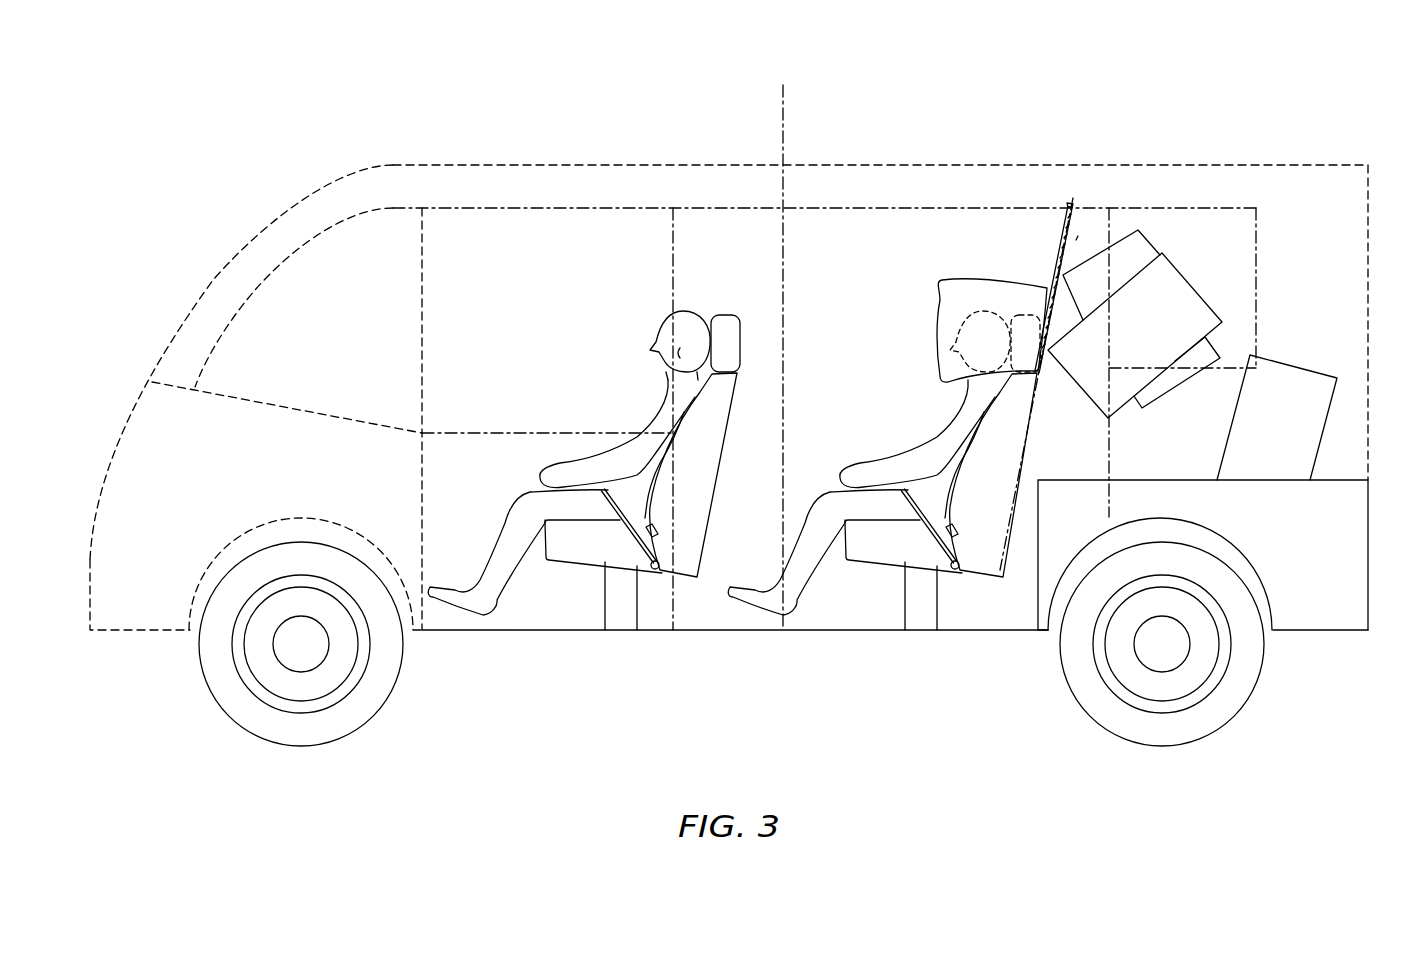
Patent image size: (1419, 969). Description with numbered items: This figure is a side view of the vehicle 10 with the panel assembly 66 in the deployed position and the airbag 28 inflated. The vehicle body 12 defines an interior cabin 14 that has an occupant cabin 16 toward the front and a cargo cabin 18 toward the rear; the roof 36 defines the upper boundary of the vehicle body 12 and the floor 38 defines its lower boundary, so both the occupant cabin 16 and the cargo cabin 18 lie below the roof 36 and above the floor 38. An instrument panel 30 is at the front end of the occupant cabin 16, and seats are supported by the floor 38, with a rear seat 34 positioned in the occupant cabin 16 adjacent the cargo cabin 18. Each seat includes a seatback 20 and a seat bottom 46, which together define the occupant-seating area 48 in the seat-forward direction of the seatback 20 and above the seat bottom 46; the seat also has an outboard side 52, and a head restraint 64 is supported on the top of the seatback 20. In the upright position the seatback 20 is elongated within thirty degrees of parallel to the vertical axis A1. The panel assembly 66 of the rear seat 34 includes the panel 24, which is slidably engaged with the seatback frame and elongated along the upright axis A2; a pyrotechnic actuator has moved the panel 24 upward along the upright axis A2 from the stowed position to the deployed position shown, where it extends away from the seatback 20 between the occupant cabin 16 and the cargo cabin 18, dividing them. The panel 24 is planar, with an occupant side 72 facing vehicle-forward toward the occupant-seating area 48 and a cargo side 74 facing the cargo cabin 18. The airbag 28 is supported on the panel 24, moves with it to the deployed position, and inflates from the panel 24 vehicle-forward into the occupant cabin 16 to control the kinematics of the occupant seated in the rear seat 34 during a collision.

The vehicle 10 is at (124, 220).
The vehicle body 12 is at (268, 232).
The interior cabin 14 is at (575, 250).
The occupant cabin 16 is at (488, 265).
The cargo cabin 18 is at (1330, 323).
The seatback 20 is at (738, 432).
The panel 24 is at (993, 409).
The airbag 28 is at (940, 305).
The instrument panel 30 is at (422, 492).
The rear seat 34 is at (888, 572).
The roof 36 is at (858, 162).
The floor 38 is at (727, 632).
The seat bottom 46 is at (863, 565).
The occupant-seating area 48 is at (898, 408).
The outboard side 52 is at (983, 533).
The head restraint 64 is at (1022, 318).
The panel assembly 66 is at (1070, 207).
The occupant side 72 is at (1058, 248).
The cargo side 74 is at (1080, 245).
The vertical axis A1 is at (783, 123).
The upright axis A2 is at (1022, 452).